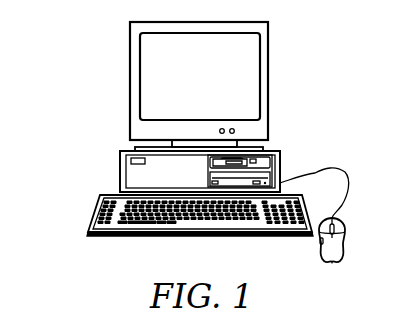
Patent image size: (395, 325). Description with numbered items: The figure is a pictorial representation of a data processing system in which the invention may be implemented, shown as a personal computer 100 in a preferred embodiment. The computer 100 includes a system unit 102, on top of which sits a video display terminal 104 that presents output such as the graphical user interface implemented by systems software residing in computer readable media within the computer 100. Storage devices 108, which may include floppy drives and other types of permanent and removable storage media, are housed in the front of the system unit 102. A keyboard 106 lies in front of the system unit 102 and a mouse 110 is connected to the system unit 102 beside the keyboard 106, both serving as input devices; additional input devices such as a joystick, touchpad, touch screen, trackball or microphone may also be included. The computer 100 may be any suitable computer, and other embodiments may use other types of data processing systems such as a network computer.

The computer 100 is at (65, 66).
The system unit 102 is at (119, 170).
The video display terminal 104 is at (269, 81).
The keyboard 106 is at (110, 236).
The storage devices 108 is at (253, 160).
The mouse 110 is at (332, 262).